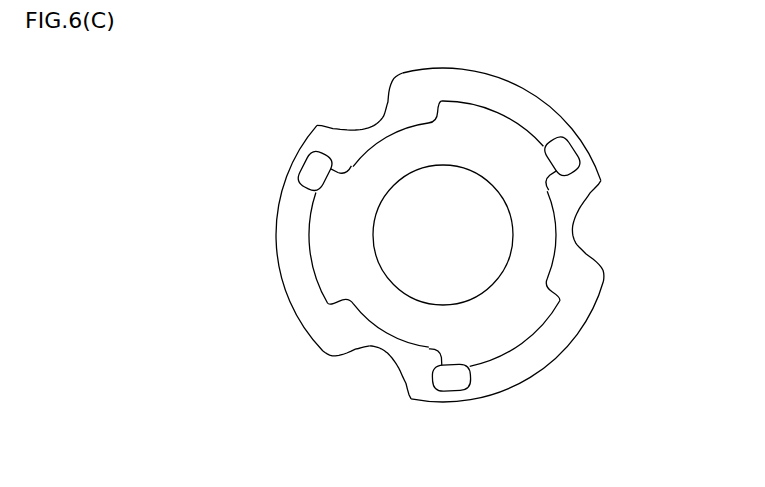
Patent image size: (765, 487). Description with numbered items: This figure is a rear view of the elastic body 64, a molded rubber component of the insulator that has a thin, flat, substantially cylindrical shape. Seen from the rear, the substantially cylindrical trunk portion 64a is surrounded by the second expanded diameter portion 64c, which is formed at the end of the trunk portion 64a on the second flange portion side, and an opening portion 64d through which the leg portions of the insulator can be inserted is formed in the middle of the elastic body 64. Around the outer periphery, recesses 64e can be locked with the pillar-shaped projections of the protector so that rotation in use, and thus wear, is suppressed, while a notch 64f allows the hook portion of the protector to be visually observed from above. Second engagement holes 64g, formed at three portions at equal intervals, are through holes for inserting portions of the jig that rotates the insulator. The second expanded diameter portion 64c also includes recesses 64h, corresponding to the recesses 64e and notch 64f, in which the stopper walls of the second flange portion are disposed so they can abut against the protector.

The elastic body 64 is at (631, 109).
The trunk portion 64a is at (552, 356).
The second expanded diameter portion 64c is at (360, 247).
The opening portion 64d is at (457, 246).
The recesses 64e is at (386, 121).
The notch 64f is at (356, 348).
The second engagement holes 64g is at (303, 163).
The recesses 64h is at (413, 127).